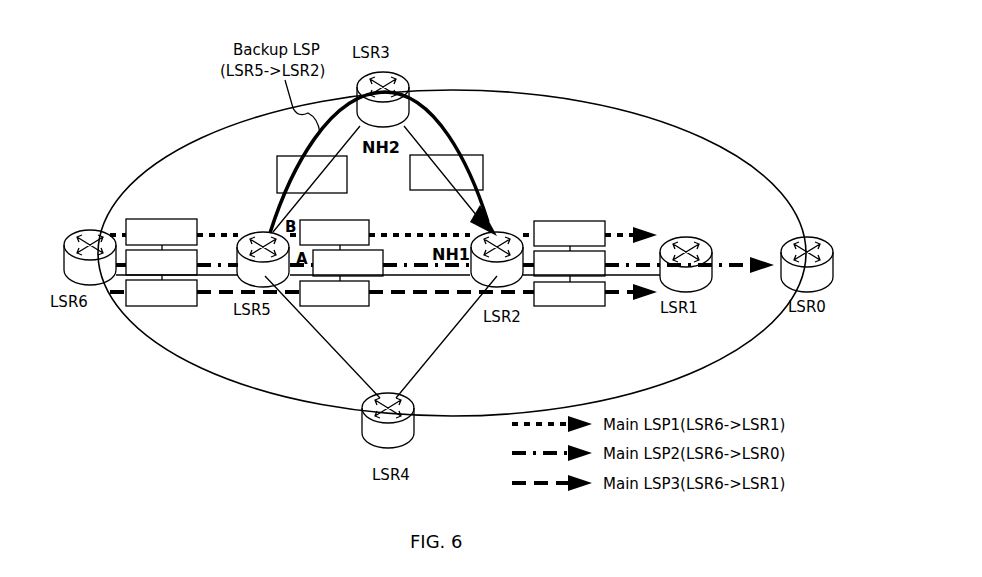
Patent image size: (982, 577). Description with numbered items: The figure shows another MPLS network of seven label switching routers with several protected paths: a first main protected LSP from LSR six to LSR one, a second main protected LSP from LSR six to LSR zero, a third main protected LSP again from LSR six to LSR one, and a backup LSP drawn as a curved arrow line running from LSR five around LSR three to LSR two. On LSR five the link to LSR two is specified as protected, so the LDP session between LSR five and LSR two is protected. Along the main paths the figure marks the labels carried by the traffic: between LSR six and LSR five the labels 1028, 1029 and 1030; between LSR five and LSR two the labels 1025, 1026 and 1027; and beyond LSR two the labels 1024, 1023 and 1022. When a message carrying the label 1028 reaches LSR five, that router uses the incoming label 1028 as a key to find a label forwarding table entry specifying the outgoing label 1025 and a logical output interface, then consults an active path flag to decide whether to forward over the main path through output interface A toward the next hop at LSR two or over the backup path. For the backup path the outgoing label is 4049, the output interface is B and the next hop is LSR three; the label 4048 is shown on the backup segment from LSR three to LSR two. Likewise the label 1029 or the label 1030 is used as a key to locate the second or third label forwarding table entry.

The label 1022 (main LSP3 label between LSR2 and LSR1) 1022 is at (569, 294).
The label 1023 (main LSP2 label between LSR2 and LSR1) 1023 is at (569, 263).
The label 1024 (main LSP1 label between LSR2 and LSR1) 1024 is at (569, 233).
The outgoing label 1025 is at (334, 232).
The label 1026 (main LSP2 label between LSR5 and LSR2) 1026 is at (348, 263).
The label 1027 (main LSP3 label between LSR5 and LSR2) 1027 is at (334, 293).
The incoming label 1028 is at (161, 232).
The message label 1029 is at (161, 262).
The message label 1030 is at (161, 293).
The backup LSP label 4048 between LSR3 and LSR2 4048 is at (446, 172).
The backup path outgoing label 4049 is at (312, 174).